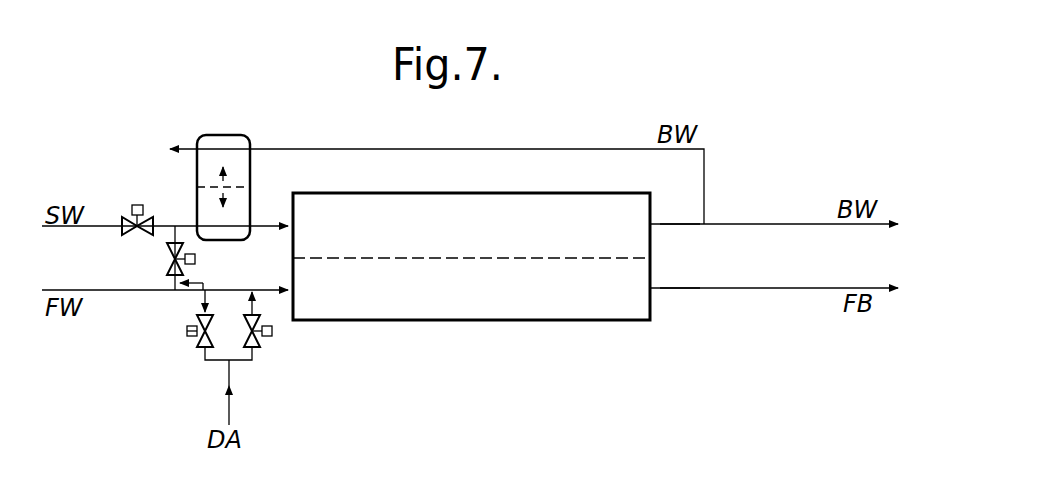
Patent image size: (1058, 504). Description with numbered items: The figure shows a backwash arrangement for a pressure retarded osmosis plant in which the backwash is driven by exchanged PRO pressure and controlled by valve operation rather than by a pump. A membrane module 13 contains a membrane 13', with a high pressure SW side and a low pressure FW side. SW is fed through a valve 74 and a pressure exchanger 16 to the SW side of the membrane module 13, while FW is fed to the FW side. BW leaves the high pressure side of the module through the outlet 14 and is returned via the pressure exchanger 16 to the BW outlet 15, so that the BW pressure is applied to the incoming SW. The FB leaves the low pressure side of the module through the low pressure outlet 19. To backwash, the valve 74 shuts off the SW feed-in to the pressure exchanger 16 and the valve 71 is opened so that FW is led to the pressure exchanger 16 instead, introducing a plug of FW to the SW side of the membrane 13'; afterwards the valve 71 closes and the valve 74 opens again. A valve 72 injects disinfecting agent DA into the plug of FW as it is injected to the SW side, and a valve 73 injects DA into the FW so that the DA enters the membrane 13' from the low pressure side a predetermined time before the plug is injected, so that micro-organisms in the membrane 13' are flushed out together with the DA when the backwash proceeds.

The membrane module 13 is at (471, 240).
The membrane 13' is at (471, 318).
The outlet 14 is at (683, 225).
The BW outlet 15 is at (190, 148).
The pressure exchanger 16 is at (250, 168).
The low pressure outlet 19 is at (683, 289).
The valve 71 is at (173, 276).
The valve 72 is at (199, 340).
The valve 73 is at (258, 340).
The valve 74 is at (121, 228).